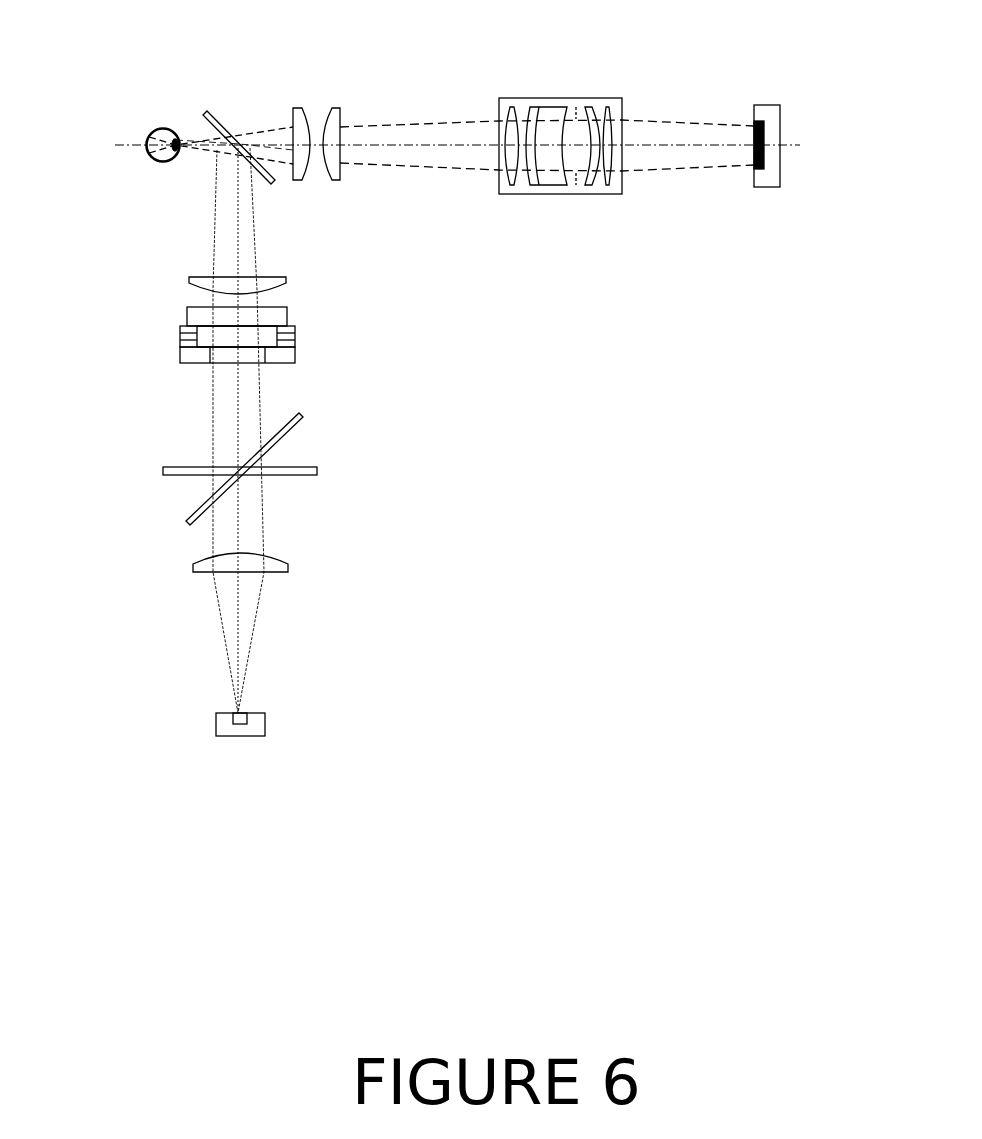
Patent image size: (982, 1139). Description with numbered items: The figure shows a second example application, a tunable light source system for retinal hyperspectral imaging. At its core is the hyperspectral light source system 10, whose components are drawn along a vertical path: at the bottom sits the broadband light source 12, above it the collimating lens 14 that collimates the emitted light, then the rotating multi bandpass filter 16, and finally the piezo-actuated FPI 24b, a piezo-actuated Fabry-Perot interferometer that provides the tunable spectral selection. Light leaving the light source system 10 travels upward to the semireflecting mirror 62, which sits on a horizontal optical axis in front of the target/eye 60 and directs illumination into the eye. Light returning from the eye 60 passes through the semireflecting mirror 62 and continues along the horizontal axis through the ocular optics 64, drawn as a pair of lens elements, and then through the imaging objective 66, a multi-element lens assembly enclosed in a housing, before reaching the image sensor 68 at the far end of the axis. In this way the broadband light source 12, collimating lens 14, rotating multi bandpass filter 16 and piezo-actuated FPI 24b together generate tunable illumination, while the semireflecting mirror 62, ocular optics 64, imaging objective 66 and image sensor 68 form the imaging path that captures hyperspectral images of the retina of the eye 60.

The hyperspectral light source system 10 is at (388, 432).
The broadband light source 12 is at (240, 736).
The collimating lens 14 is at (193, 568).
The rotating multi bandpass filter 16 is at (163, 470).
The piezo-actuated FPI 24b is at (187, 315).
The target/eye 60 is at (148, 152).
The semireflecting mirror 62 is at (207, 112).
The ocular optics 64 is at (320, 103).
The imaging objective 66 is at (548, 97).
The image sensor 68 is at (765, 104).